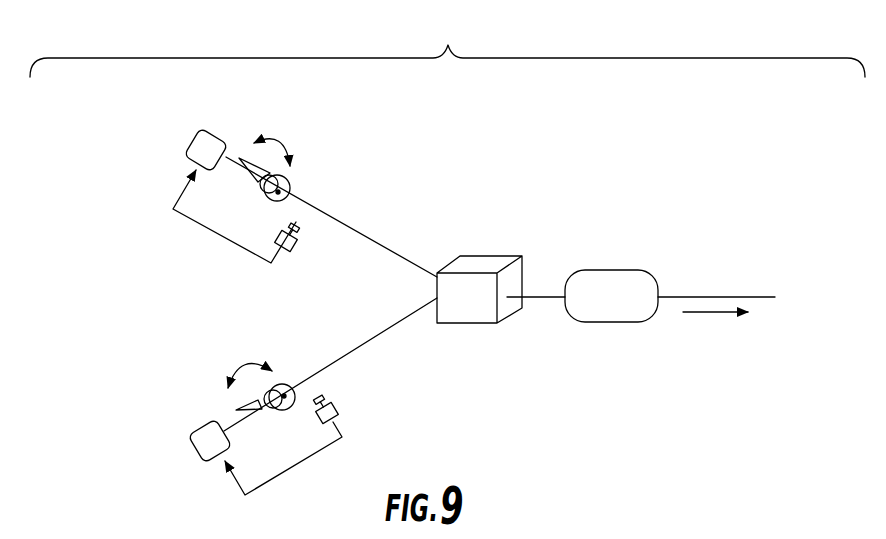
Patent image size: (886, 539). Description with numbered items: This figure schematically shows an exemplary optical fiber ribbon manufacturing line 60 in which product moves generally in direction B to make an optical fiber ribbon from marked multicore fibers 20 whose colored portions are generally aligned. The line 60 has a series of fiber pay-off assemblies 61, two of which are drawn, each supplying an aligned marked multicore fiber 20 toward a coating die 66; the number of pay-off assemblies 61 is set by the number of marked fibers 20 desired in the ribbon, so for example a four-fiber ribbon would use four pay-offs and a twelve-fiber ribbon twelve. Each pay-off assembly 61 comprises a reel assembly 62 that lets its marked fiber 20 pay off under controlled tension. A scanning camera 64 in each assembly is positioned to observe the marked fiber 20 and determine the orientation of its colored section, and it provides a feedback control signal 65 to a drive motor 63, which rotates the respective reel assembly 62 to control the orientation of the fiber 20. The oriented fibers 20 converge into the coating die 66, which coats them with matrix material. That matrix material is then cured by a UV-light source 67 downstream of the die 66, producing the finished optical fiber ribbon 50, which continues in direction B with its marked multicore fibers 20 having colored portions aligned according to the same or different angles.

The optical fiber ribbon manufacturing line 60 is at (447, 44).
The fiber pay-off assembly 61 is at (259, 122).
The reel assembly 62 is at (305, 182).
The drive motor 63 is at (196, 128).
The scanning camera 64 is at (305, 252).
The feedback control signal 65 is at (181, 231).
The coating die 66 is at (491, 251).
The UV-light source 67 is at (624, 248).
The optical fiber ribbon 50 is at (692, 291).
The marked multicore fiber 20 is at (366, 216).
The direction of product movement B is at (698, 313).